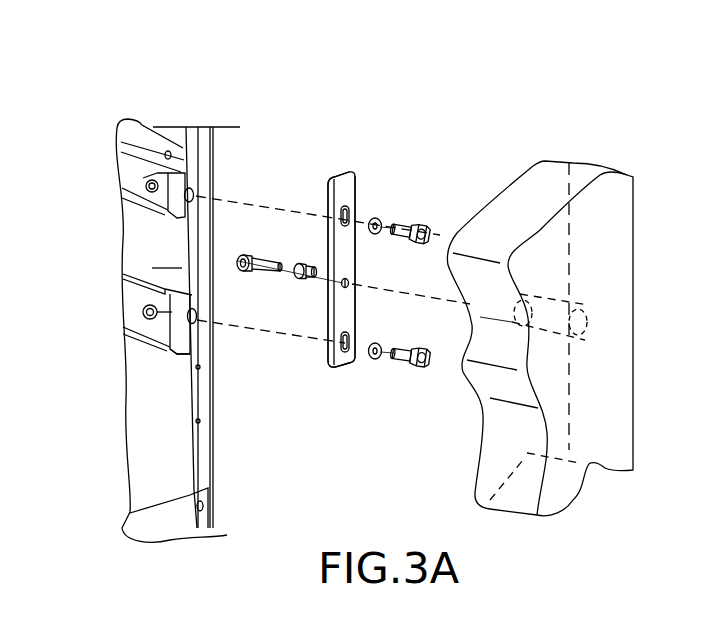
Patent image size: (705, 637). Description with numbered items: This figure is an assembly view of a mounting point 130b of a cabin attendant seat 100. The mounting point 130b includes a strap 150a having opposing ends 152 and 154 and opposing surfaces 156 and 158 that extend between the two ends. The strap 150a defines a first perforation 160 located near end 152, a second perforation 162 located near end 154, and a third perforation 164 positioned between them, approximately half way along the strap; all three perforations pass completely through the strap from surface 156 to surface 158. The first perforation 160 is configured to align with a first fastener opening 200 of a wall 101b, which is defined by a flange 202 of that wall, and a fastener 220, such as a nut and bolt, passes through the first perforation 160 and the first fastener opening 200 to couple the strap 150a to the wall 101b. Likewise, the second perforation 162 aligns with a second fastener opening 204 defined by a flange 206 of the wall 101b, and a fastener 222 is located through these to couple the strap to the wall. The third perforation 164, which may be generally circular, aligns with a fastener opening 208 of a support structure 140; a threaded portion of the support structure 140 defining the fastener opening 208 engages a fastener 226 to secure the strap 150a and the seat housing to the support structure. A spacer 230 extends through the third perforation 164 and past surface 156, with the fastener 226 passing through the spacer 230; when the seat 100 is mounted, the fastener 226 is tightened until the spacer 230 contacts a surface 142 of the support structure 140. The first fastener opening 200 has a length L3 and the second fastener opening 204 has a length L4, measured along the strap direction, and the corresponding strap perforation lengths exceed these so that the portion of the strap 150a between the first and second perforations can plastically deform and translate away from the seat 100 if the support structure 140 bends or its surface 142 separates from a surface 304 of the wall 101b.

The cabin attendant seat 100 is at (121, 128).
The mounting point 130b is at (291, 129).
The flange 202 is at (190, 178).
The wall 101b is at (167, 258).
The length of first fastener opening L3 is at (167, 208).
The length of second fastener opening L4 is at (188, 320).
The first fastener opening 200 is at (197, 197).
The second fastener opening 204 is at (197, 320).
The flange 206 is at (182, 354).
The surface of wall 304 is at (207, 437).
The strap 150a is at (353, 175).
The end 152 is at (333, 180).
The end 154 is at (343, 366).
The surface 156 is at (350, 256).
The surface 158 is at (330, 307).
The first perforation 160 is at (352, 213).
The second perforation 162 is at (352, 340).
The third perforation 164 is at (354, 284).
The fastener 220 is at (410, 223).
The fastener 222 is at (410, 361).
The fastener 226 is at (267, 272).
The spacer 230 is at (314, 264).
The support structure 140 is at (607, 197).
The surface of support structure 142 is at (500, 197).
The fastener opening 208 is at (601, 329).